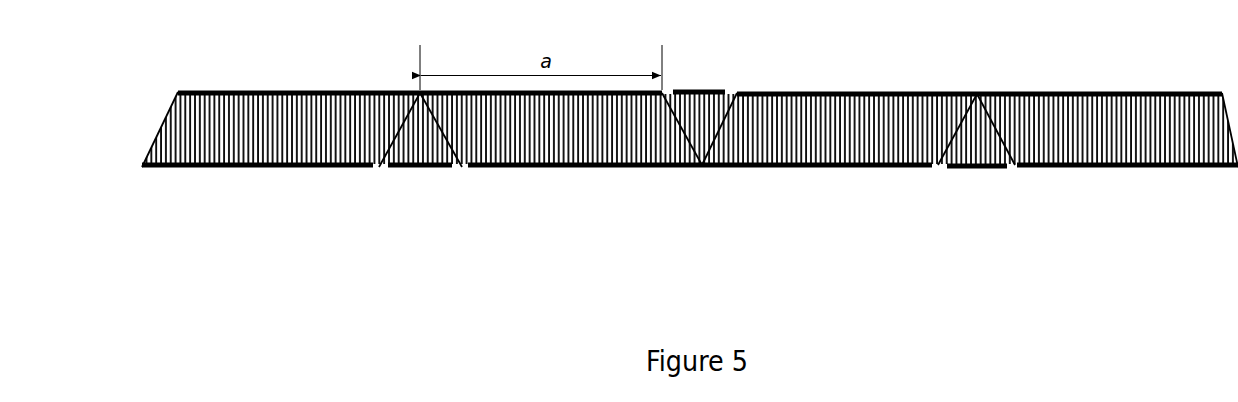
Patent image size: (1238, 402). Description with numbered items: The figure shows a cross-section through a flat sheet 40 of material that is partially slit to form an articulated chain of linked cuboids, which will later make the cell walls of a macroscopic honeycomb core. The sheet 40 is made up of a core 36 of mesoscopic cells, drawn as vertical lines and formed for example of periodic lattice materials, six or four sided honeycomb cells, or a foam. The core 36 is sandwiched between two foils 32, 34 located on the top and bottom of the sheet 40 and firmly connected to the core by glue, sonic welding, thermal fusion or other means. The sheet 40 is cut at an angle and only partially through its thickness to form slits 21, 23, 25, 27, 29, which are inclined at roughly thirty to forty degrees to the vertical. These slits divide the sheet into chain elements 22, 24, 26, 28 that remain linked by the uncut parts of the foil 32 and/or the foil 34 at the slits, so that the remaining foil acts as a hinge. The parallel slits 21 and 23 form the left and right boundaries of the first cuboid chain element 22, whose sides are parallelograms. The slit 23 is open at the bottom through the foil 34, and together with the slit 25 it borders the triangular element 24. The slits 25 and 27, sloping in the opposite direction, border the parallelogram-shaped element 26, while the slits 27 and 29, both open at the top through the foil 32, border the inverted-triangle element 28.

The slit 21 is at (165, 133).
The first cuboid chain element 22 is at (265, 133).
The slit 23 is at (378, 173).
The chain element 24 is at (417, 133).
The slit 25 is at (465, 173).
The chain element 26 is at (570, 133).
The slit 27 is at (663, 142).
The chain element 28 is at (699, 115).
The slit 29 is at (723, 137).
The top foil 32 is at (1087, 102).
The bottom foil 34 is at (865, 170).
The core of mesoscopic cells 36 is at (810, 135).
The sheet 40 is at (480, 288).